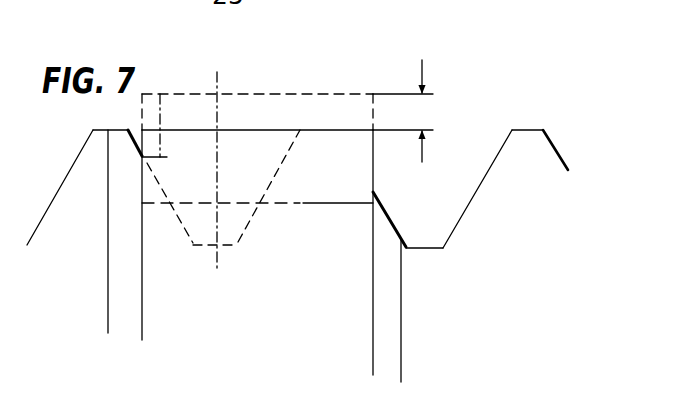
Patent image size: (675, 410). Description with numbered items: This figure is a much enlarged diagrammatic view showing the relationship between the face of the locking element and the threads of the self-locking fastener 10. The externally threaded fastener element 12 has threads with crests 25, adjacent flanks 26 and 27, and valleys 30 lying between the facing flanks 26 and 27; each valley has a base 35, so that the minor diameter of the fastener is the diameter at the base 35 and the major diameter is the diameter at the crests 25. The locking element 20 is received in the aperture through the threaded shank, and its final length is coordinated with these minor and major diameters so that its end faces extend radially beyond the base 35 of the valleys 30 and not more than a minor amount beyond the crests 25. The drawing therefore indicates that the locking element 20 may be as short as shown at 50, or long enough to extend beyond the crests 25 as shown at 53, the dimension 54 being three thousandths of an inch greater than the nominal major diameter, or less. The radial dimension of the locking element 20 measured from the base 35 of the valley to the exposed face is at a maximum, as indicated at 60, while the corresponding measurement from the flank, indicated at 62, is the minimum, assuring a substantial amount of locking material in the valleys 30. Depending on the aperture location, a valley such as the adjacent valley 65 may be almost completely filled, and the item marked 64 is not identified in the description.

The self-locking fastener 10 is at (470, 61).
The externally threaded fastener element 12 is at (504, 145).
The locking element 20 is at (146, 252).
The crest 25 is at (103, 128).
The flank 26 is at (206, 176).
The flank 27 is at (60, 188).
The valley 30 is at (247, 235).
The base 35 is at (202, 252).
The short locking element length 50 is at (327, 203).
The long locking element length 53 is at (237, 95).
The dimension 54 is at (406, 111).
The maximum radial dimension 60 is at (217, 152).
The minimum radial dimension 62 is at (167, 95).
The phantom tooth side 64 is at (388, 188).
The valley 65 is at (174, 147).